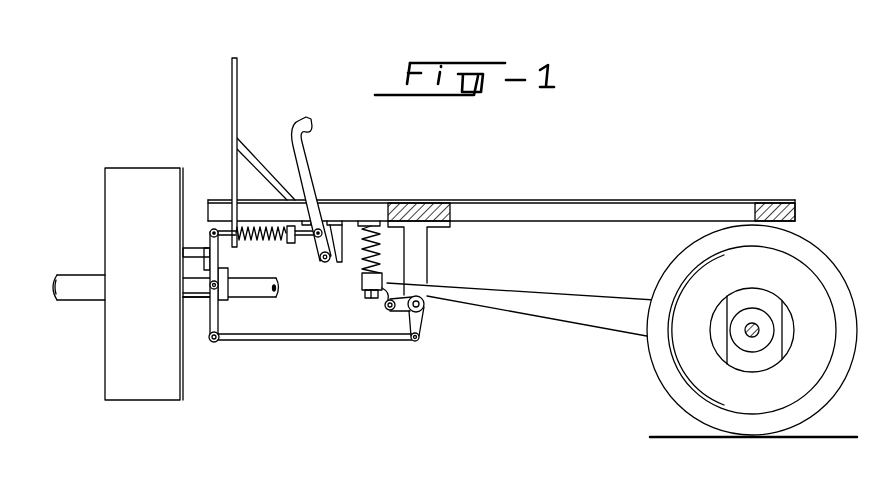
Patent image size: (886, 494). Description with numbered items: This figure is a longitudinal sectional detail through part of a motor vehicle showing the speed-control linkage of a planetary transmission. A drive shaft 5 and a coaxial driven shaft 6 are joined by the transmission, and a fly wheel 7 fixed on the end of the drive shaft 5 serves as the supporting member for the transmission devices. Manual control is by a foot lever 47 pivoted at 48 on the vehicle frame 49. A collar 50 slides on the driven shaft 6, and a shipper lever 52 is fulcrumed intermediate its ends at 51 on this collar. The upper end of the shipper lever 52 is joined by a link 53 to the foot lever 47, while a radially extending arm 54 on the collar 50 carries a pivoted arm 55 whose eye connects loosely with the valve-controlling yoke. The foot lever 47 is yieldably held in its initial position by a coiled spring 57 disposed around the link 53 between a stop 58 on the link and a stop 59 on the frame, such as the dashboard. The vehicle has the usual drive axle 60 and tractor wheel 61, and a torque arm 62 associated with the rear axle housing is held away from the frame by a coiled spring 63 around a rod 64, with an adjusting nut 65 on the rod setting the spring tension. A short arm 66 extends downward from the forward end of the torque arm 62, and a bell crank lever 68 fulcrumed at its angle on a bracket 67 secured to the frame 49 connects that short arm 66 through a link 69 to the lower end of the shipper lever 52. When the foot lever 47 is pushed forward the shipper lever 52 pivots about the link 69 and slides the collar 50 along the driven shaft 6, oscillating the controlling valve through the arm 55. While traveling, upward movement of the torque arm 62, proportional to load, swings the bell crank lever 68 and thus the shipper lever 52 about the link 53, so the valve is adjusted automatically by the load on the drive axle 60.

The drive shaft 5 is at (72, 290).
The driven shaft 6 is at (266, 290).
The fly wheel 7 is at (144, 284).
The foot lever 47 is at (312, 176).
The pivot 48 is at (323, 263).
The frame 49 is at (603, 203).
The collar 50 is at (207, 298).
The fulcrum 51 is at (222, 290).
The shipper lever 52 is at (220, 259).
The link 53 is at (228, 233).
The radially extending arm 54 is at (205, 266).
The arm 55 is at (192, 250).
The coiled spring 57 is at (267, 242).
The stop 58 is at (290, 225).
The stop 59 is at (205, 244).
The drive axle 60 is at (760, 334).
The tractor wheel 61 is at (883, 305).
The torque arm 62 is at (575, 312).
The coiled spring 63 is at (380, 258).
The rod 64 is at (361, 262).
The adjusting nut 65 is at (362, 296).
The short arm 66 is at (383, 300).
The bracket 67 is at (418, 238).
The bell crank lever 68 is at (420, 320).
The link 69 is at (366, 342).